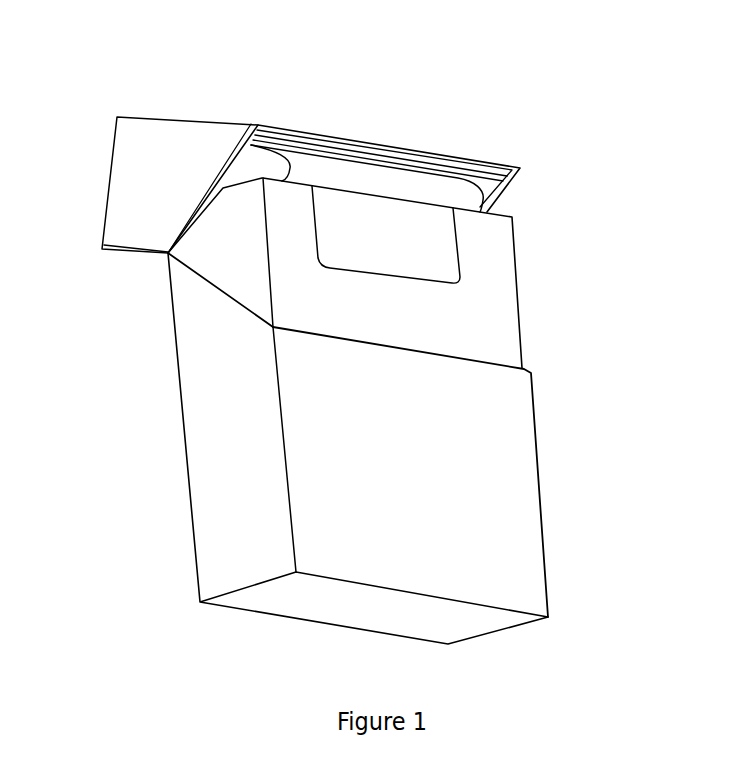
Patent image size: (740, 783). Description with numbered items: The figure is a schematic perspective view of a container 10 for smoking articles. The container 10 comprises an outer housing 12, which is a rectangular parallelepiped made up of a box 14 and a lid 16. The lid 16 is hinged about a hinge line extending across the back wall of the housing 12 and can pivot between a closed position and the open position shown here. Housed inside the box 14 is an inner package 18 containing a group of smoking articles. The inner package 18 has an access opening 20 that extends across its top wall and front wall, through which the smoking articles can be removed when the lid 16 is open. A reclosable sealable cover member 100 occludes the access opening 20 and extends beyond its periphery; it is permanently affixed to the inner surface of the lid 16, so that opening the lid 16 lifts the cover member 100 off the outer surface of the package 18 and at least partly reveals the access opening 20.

The container 10 is at (438, 82).
The outer housing 12 is at (108, 407).
The box 14 is at (513, 485).
The lid 16 is at (128, 155).
The inner package 18 is at (510, 335).
The access opening 20 is at (413, 263).
The reclosable sealable cover member 100 is at (445, 189).